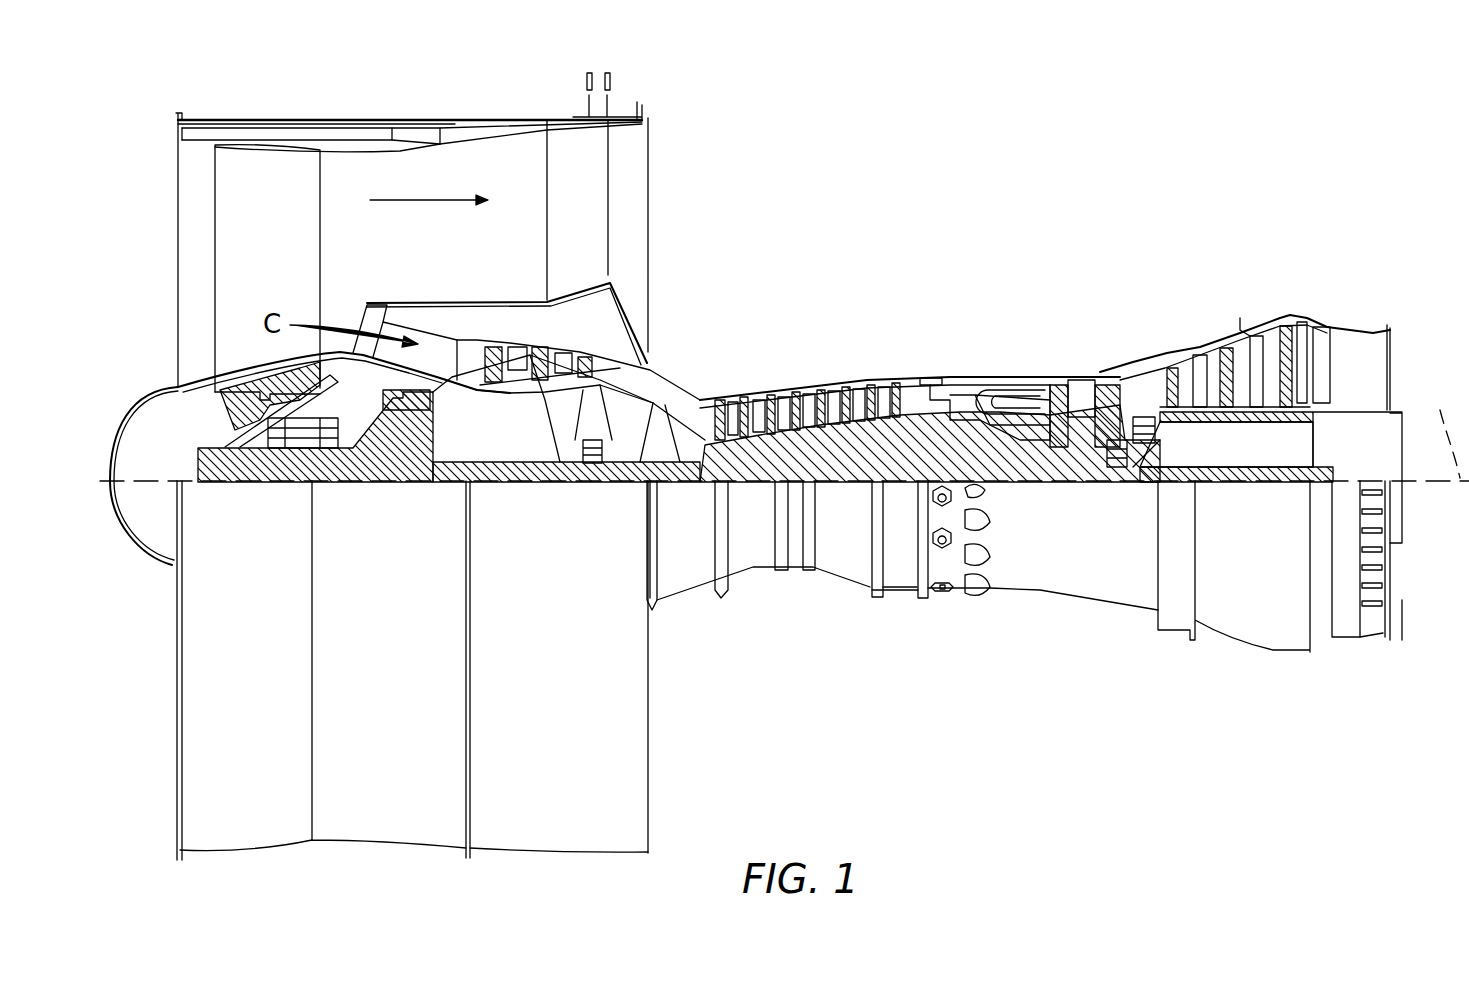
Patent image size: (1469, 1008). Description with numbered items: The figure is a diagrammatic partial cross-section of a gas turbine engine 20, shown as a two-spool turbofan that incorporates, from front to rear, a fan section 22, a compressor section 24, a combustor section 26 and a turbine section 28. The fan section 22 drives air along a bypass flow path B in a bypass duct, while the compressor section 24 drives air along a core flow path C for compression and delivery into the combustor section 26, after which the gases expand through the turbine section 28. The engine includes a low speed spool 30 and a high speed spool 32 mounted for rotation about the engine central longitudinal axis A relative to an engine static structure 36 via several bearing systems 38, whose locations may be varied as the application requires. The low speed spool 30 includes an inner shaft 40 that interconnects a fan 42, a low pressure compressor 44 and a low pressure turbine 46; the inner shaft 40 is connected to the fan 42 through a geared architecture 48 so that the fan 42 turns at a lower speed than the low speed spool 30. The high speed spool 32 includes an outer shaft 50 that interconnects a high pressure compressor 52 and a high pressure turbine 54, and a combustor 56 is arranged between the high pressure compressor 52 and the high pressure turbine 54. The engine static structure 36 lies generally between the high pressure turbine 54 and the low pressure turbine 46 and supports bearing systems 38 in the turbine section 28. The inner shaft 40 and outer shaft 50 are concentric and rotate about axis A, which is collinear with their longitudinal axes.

The gas turbine engine 20 is at (1131, 184).
The fan section 22 is at (448, 92).
The compressor section 24 is at (734, 327).
The combustor section 26 is at (993, 335).
The turbine section 28 is at (1150, 323).
The low speed spool 30 is at (852, 495).
The high speed spool 32 is at (920, 376).
The engine static structure 36 is at (908, 604).
The bearing systems 38 is at (278, 443).
The inner shaft 40 is at (680, 484).
The fan 42 is at (281, 257).
The low pressure compressor 44 is at (542, 358).
The low pressure turbine 46 is at (1243, 328).
The geared architecture 48 is at (415, 457).
The outer shaft 50 is at (1010, 480).
The high pressure compressor 52 is at (815, 437).
The high pressure turbine 54 is at (1080, 378).
The combustor 56 is at (1003, 398).